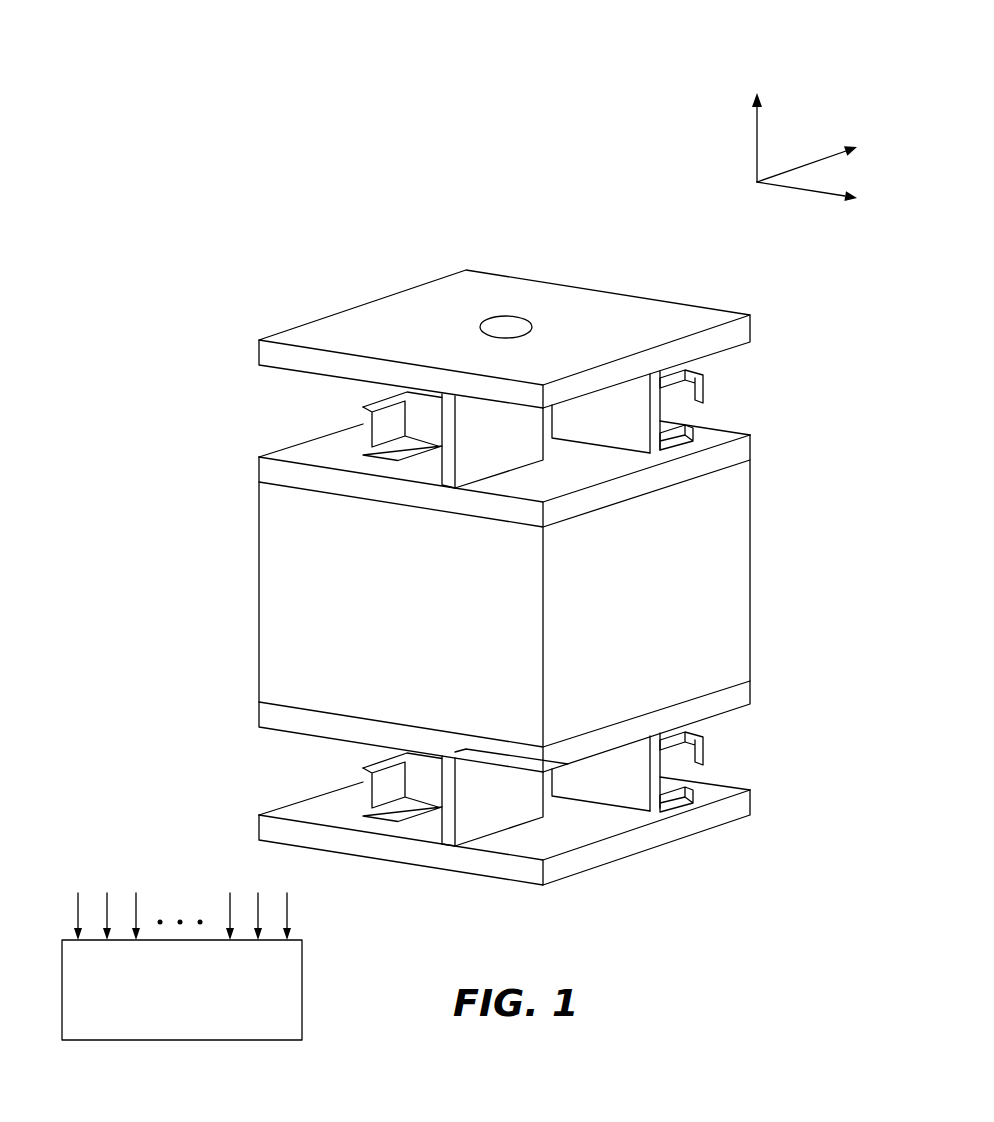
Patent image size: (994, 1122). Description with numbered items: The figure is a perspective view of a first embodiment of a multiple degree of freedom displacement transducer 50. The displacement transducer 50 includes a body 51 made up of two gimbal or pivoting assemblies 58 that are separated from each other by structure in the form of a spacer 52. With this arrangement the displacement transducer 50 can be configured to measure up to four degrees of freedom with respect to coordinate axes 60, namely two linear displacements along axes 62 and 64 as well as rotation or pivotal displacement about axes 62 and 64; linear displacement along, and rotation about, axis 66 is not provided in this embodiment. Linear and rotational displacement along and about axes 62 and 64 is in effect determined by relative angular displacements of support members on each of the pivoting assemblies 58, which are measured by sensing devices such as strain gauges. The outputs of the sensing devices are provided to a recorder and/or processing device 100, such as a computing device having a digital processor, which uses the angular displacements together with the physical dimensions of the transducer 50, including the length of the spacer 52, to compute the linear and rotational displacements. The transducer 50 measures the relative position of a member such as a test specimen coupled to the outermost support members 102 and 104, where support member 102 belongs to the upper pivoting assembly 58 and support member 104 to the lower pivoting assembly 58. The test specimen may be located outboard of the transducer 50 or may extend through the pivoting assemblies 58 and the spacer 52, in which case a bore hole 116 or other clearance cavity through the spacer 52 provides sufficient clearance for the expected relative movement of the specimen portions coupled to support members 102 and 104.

The displacement transducer 50 is at (296, 226).
The body 51 is at (182, 551).
The spacer 52 is at (752, 605).
The pivoting assemblies 58 is at (290, 404).
The coordinate axes 60 is at (695, 90).
The axis 62 is at (791, 200).
The axis 64 is at (803, 170).
The axis 66 is at (748, 138).
The recorder and/or processing device 100 is at (249, 955).
The support member 102 is at (553, 286).
The support member 104 is at (707, 822).
The bore hole 116 is at (480, 323).